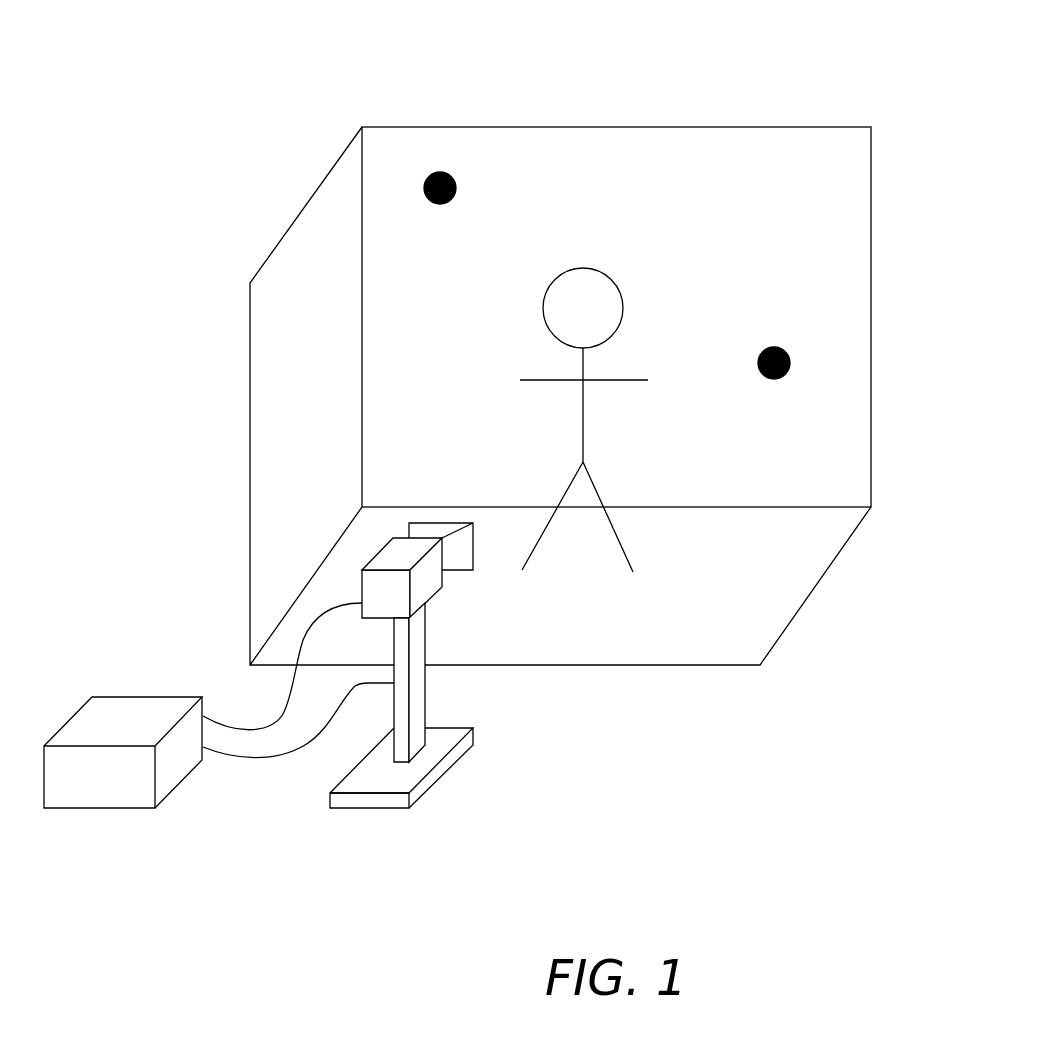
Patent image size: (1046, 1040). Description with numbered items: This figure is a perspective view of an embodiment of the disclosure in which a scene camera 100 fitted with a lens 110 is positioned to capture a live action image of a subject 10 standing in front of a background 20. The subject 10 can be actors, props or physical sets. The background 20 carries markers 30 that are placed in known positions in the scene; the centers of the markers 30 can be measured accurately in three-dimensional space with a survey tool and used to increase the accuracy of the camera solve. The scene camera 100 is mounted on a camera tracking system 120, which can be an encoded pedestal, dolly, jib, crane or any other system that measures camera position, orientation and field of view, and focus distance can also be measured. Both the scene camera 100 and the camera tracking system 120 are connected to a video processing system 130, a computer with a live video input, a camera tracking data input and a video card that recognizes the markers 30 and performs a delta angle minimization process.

The subject 10 is at (616, 285).
The background 20 is at (712, 127).
The markers 30 is at (431, 174).
The scene camera 100 is at (442, 587).
The lens 110 is at (473, 560).
The camera tracking system 120 is at (442, 780).
The video processing system 130 is at (172, 792).